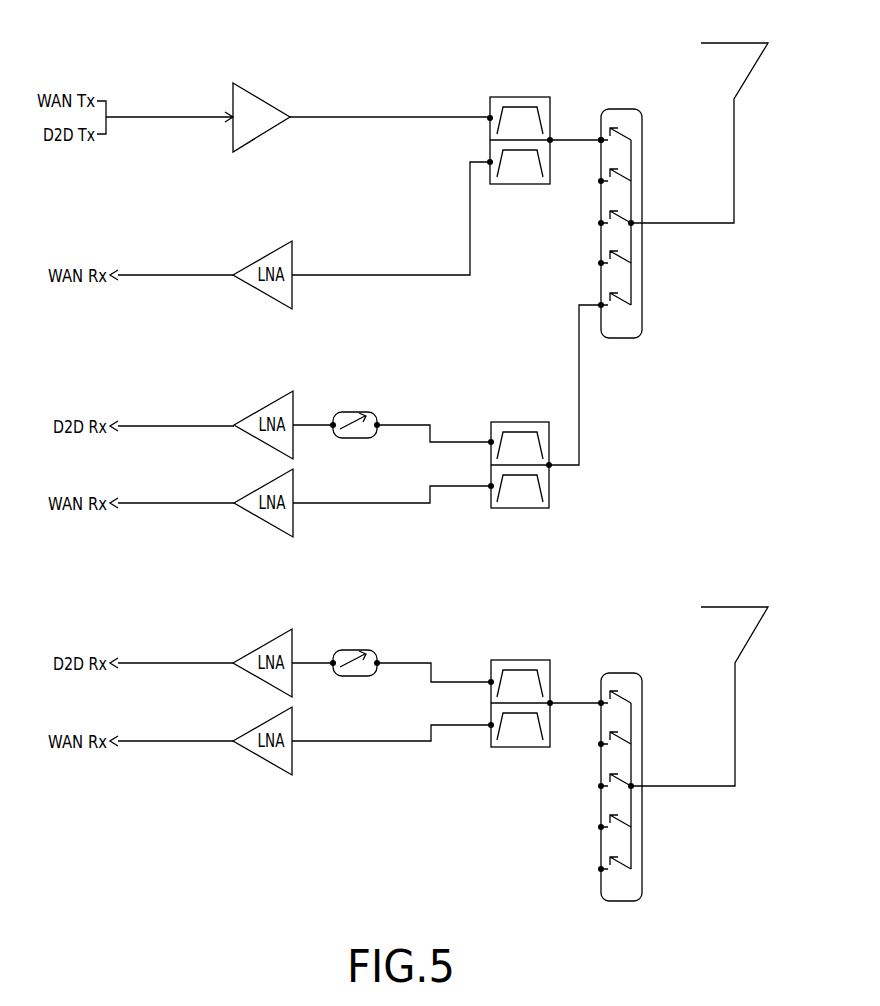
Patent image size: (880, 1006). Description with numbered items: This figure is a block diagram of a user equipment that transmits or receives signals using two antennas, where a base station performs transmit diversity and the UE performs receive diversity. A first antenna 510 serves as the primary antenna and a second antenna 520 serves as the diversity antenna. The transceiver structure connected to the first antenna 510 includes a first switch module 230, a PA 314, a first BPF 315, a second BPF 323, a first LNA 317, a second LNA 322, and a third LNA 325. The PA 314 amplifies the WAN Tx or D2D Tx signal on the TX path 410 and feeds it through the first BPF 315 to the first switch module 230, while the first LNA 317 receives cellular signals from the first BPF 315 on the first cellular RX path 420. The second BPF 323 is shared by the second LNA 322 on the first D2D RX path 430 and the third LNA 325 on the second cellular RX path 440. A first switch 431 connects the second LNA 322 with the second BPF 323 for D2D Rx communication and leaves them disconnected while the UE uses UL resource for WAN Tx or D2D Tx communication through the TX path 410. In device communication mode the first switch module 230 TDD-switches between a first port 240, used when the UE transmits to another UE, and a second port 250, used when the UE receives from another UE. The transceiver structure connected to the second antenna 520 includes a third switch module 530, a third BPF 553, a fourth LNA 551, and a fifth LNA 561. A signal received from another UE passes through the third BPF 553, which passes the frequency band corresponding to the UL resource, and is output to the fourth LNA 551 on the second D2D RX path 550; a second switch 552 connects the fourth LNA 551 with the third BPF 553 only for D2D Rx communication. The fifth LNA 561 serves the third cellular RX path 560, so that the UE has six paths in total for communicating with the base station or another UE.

The TX path 410 is at (132, 116).
The PA 314 is at (267, 103).
The first BPF 315 is at (515, 96).
The first switch module 230 is at (624, 110).
The first port 240 is at (598, 138).
The second port 250 is at (598, 304).
The first antenna 510 is at (726, 43).
The first LNA 317 is at (258, 260).
The first cellular RX path 420 is at (136, 274).
The second LNA 322 is at (258, 410).
The first switch 431 is at (362, 412).
The second BPF 323 is at (515, 421).
The third LNA 325 is at (258, 488).
The first D2D RX path 430 is at (136, 425).
The second cellular RX path 440 is at (136, 502).
The second antenna 520 is at (726, 607).
The third switch module 530 is at (624, 673).
The third BPF 553 is at (515, 659).
The fourth LNA 551 is at (258, 647).
The second switch 552 is at (362, 650).
The fifth LNA 561 is at (258, 724).
The second D2D RX path 550 is at (136, 662).
The third cellular RX path 560 is at (136, 740).